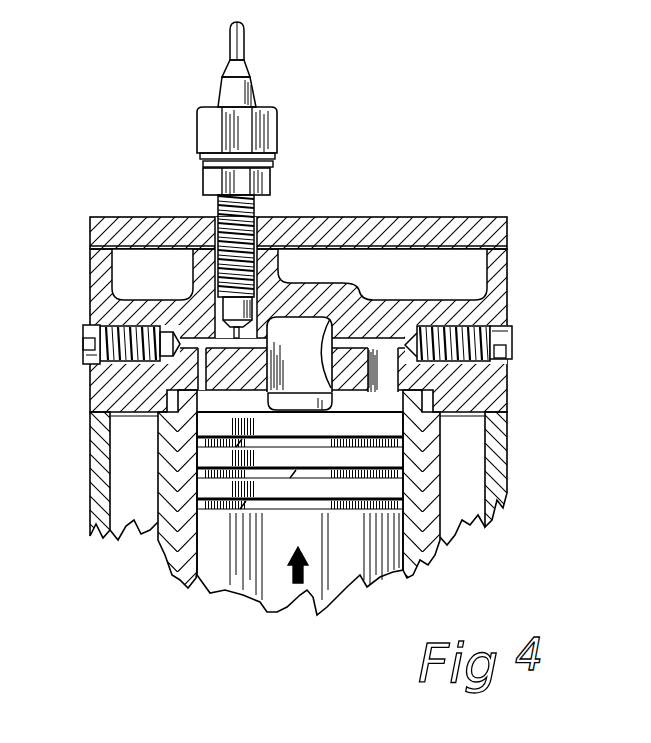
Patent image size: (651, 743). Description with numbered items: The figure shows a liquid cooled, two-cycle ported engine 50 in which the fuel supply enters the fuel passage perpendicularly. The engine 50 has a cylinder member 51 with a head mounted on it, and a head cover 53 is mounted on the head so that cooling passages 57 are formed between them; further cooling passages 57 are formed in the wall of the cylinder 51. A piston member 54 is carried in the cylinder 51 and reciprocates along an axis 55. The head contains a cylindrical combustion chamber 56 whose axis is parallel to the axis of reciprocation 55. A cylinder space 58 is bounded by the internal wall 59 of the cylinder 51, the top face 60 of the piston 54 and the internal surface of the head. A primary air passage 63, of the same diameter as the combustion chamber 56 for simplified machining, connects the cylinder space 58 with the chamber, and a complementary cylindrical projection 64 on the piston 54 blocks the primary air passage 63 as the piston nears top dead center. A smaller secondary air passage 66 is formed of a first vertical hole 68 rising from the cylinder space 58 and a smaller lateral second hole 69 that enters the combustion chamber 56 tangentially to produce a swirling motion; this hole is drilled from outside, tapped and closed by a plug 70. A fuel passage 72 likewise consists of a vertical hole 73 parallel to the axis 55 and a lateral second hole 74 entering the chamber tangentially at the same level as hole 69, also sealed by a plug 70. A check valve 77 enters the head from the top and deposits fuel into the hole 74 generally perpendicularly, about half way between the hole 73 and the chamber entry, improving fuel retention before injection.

The engine 50 is at (509, 278).
The cylinder member 51 is at (509, 442).
The head cover 53 is at (393, 219).
The piston member 54 is at (224, 577).
The axis of reciprocation 55 is at (292, 568).
The combustion chamber 56 is at (303, 333).
The cooling passages 57 is at (122, 263).
The cylinder space 58 is at (193, 438).
The internal wall 59 is at (394, 577).
The top face 60 is at (447, 414).
The primary air passage 63 is at (320, 348).
The cylindrical projection 64 is at (300, 395).
The secondary air passage 66 is at (404, 328).
The first vertical hole 68 is at (405, 393).
The lateral second hole 69 is at (387, 346).
The plug 70 is at (83, 328).
The fuel passage 72 is at (194, 333).
The vertical hole 73 is at (212, 347).
The lateral second hole 74 is at (213, 332).
The check valve 77 is at (205, 98).